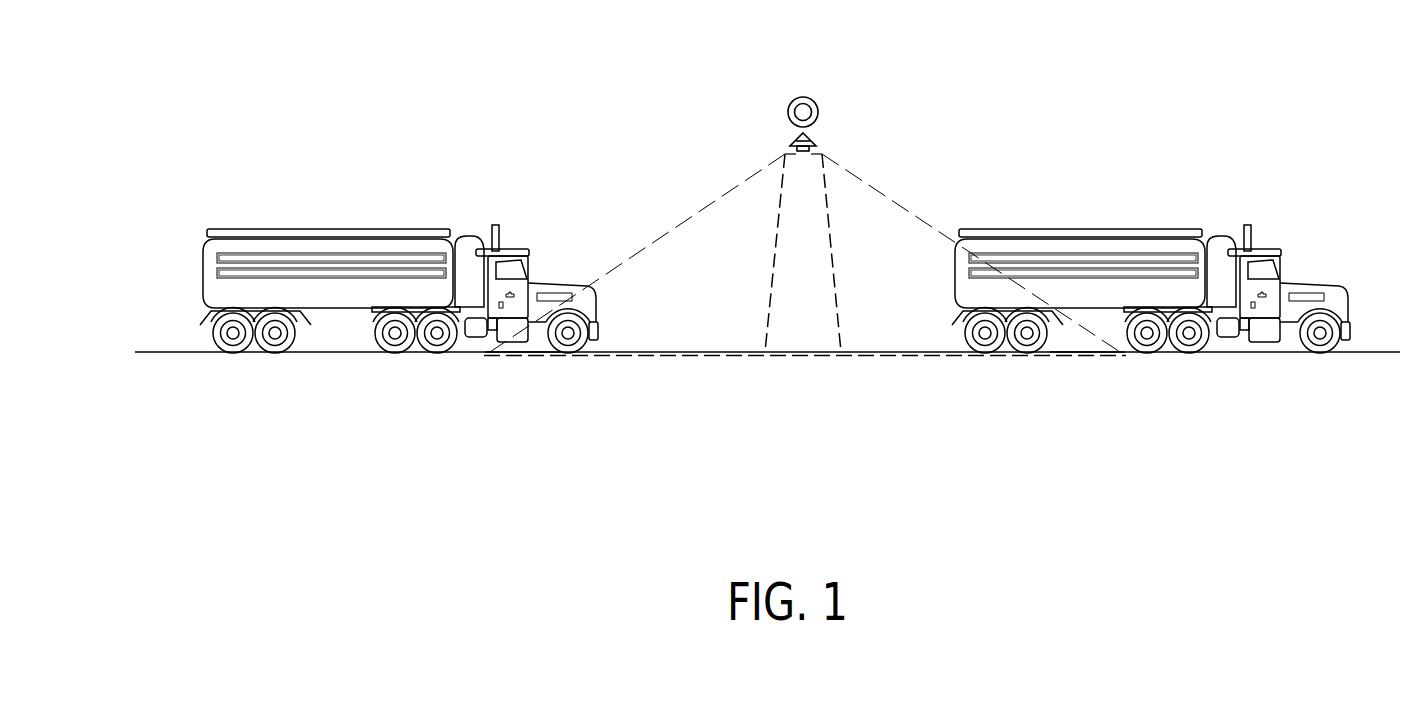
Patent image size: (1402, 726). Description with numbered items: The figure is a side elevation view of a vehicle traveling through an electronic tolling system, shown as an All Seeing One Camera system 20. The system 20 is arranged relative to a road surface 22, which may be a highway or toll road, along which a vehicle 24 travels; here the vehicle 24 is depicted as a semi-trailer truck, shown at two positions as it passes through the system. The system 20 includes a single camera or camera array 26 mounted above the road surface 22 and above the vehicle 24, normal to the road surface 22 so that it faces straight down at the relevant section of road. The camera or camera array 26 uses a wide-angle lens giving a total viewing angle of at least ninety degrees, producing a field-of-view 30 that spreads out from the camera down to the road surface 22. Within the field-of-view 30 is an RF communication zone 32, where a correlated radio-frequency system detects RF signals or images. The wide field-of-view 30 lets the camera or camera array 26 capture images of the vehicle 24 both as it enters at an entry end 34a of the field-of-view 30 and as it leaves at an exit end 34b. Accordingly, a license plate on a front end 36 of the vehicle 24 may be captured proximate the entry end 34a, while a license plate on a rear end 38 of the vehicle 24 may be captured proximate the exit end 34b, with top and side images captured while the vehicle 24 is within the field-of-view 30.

The All Seeing One Camera (ASOC) system 20 is at (785, 82).
The road surface 22 is at (171, 352).
The vehicle 24 is at (267, 248).
The camera or camera array 26 is at (790, 146).
The field-of-view 30 is at (738, 210).
The RF communication zone 32 is at (806, 225).
The entry end of the field-of-view 34a is at (517, 352).
The exit end of the field-of-view 34b is at (1082, 344).
The front end of the vehicle 36 is at (593, 303).
The rear end of the vehicle 38 is at (952, 275).